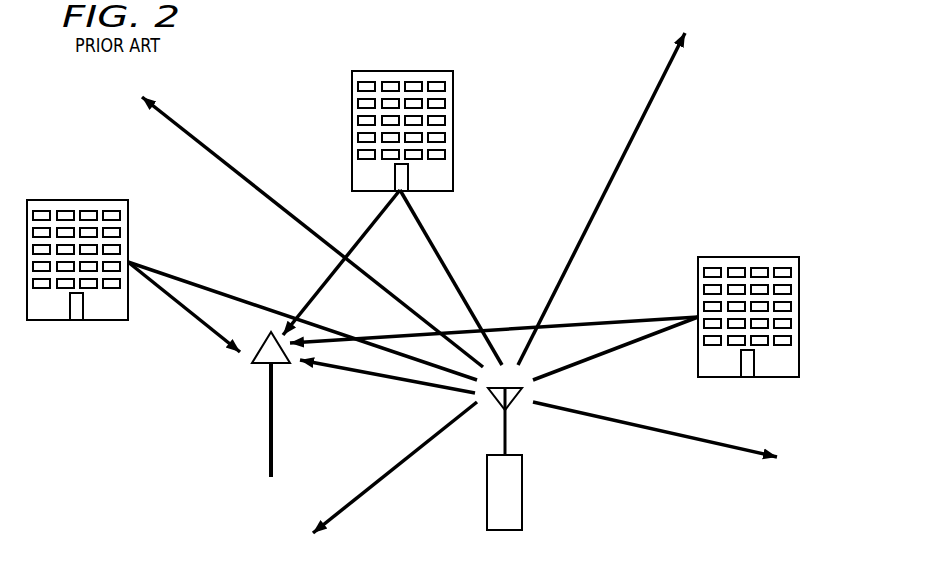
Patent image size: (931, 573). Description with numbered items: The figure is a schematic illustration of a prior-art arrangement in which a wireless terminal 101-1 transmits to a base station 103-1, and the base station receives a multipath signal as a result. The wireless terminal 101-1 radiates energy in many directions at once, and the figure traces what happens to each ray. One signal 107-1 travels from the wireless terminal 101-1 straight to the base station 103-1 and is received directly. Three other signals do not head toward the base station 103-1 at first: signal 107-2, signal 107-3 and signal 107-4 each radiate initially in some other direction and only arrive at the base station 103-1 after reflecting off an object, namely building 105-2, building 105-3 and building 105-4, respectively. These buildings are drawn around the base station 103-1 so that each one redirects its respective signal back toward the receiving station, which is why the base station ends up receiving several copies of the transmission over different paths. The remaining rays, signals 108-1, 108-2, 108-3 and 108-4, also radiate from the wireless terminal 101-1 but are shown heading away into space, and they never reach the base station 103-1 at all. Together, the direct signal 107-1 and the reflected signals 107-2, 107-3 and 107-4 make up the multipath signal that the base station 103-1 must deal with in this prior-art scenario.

The wireless terminal 101-1 is at (522, 503).
The base station 103-1 is at (268, 443).
The building 105-2 is at (740, 257).
The building 105-3 is at (397, 71).
The building 105-4 is at (73, 200).
The signal 107-1 is at (372, 377).
The signal 107-2 is at (517, 322).
The signal 107-3 is at (323, 283).
The signal 107-4 is at (187, 312).
The signal 108-1 is at (703, 443).
The signal 108-2 is at (617, 172).
The signal 108-3 is at (207, 143).
The signal 108-4 is at (363, 495).